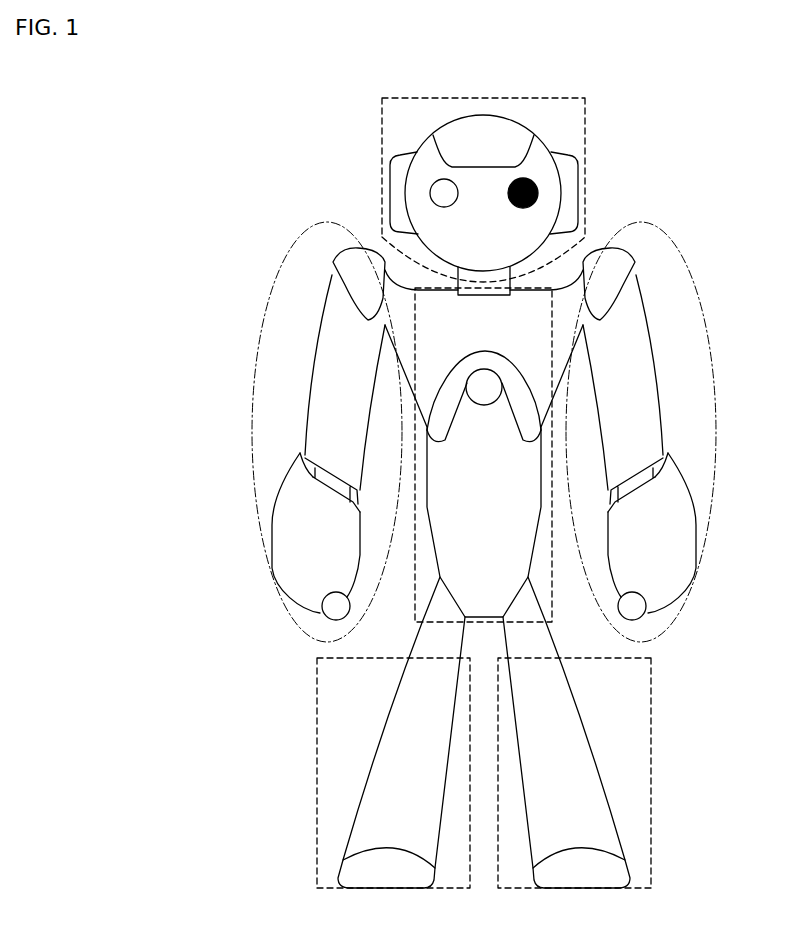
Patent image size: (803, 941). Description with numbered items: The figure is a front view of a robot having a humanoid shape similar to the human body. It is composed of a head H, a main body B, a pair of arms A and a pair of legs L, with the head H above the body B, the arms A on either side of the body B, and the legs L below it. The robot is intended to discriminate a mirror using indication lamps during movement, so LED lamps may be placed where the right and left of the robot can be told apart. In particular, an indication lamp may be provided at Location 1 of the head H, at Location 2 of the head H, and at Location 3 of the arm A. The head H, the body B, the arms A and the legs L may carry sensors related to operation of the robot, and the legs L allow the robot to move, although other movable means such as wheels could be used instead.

The head H is at (483, 97).
The Location 1 of the head 1 is at (430, 193).
The Location 2 of the head 2 is at (390, 159).
The Location 3 of the arm 3 is at (345, 244).
The arm A is at (253, 434).
The main body B is at (415, 610).
The leg L is at (317, 775).